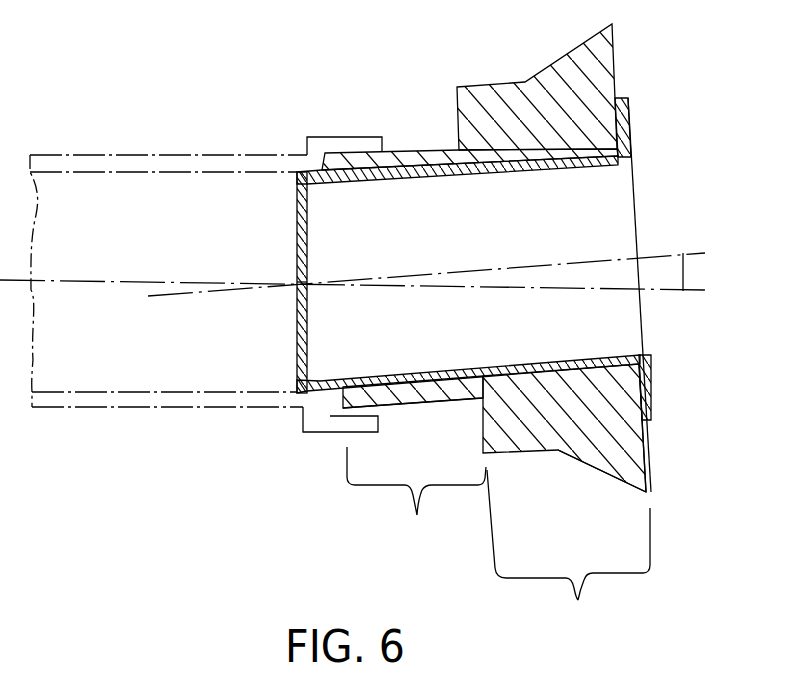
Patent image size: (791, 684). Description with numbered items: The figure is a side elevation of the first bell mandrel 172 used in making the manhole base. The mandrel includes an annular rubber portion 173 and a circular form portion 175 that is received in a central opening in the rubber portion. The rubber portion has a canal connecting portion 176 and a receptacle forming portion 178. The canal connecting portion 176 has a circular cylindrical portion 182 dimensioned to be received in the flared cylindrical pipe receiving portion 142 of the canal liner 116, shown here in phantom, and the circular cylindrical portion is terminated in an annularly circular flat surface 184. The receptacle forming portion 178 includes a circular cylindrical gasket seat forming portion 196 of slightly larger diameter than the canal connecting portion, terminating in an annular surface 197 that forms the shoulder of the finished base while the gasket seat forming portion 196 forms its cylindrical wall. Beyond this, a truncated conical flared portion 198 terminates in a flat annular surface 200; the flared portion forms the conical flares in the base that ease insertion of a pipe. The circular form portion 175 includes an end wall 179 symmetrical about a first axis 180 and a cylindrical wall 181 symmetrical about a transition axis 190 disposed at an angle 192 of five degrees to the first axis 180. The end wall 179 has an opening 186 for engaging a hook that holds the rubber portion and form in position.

The canal liner 116 is at (138, 155).
The flared cylindrical pipe receiving portion 142 is at (368, 137).
The first bell mandrel 172 is at (403, 106).
The annular rubber portion 173 is at (603, 57).
The circular form portion 175 is at (597, 164).
The canal connecting portion 176 is at (416, 501).
The receptacle forming portion 178 is at (568, 552).
The end wall 179 is at (296, 335).
The first axis 180 is at (172, 282).
The cylindrical wall 181 is at (605, 357).
The circular cylindrical portion 182 is at (402, 410).
The annularly circular flat surface 184 is at (325, 414).
The opening 186 is at (298, 280).
The transition axis 190 is at (522, 266).
The angle 192 is at (683, 272).
The gasket seat forming portion 196 is at (532, 451).
The annular surface 197 is at (483, 435).
The truncated conical flared portion 198 is at (602, 472).
The flat annular surface 200 is at (646, 462).